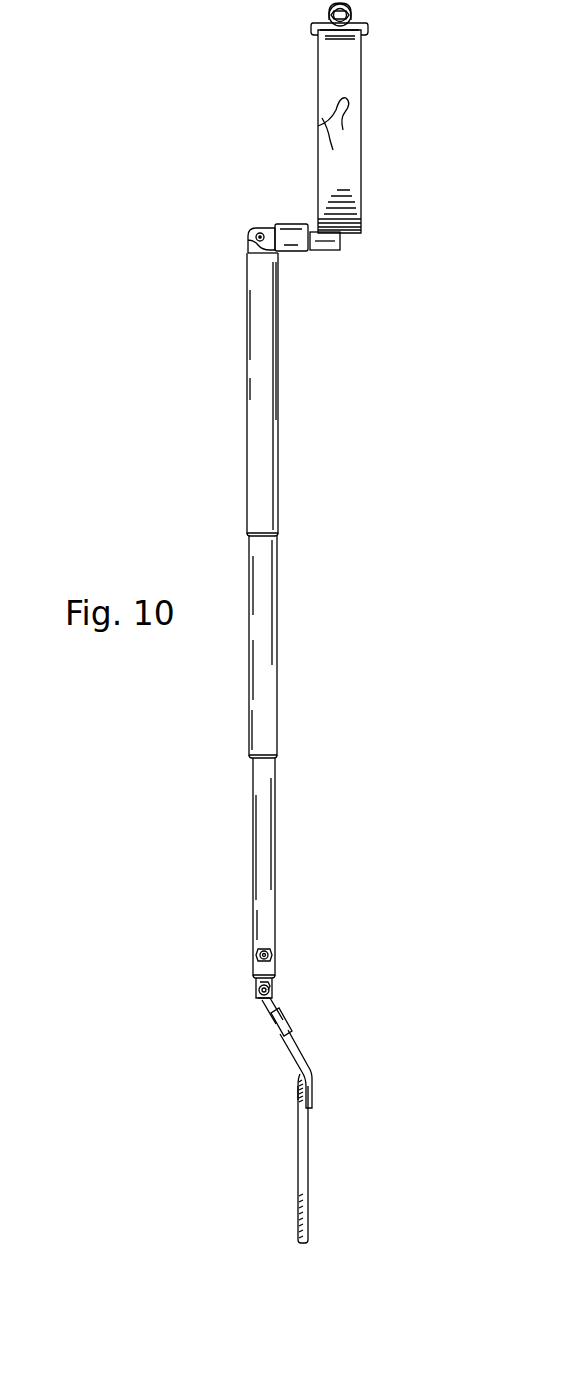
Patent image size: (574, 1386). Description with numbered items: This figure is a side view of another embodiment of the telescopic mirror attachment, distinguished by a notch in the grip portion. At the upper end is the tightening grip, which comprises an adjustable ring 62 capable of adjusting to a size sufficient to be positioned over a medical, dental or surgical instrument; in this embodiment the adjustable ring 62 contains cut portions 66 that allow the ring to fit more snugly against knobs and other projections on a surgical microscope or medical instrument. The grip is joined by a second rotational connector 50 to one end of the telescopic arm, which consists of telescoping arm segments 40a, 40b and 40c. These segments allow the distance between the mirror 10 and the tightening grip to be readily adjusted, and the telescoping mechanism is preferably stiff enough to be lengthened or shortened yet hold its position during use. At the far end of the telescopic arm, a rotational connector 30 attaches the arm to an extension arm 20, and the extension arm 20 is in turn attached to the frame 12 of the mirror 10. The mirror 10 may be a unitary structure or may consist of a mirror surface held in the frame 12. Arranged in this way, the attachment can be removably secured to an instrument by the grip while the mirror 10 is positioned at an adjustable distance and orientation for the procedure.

The mirror 10 is at (283, 1161).
The frame 12 is at (300, 1242).
The extension arm 20 is at (300, 1052).
The rotational connector 30 is at (270, 990).
The telescoping arm segment 40a is at (275, 862).
The telescoping arm segment 40b is at (278, 635).
The telescoping arm segment 40c is at (279, 378).
The second rotational connector 50 is at (270, 250).
The adjustable ring 62 is at (354, 233).
The cut portions 66 is at (340, 97).